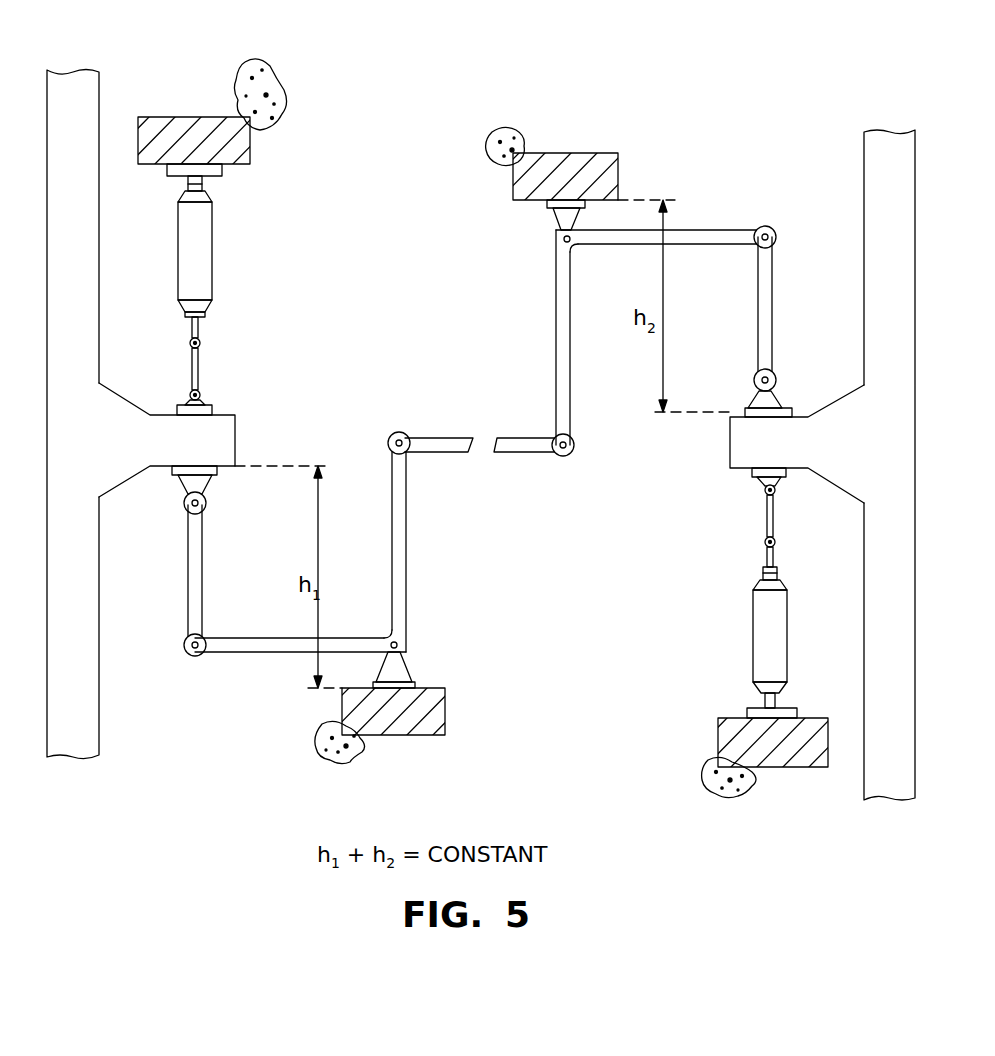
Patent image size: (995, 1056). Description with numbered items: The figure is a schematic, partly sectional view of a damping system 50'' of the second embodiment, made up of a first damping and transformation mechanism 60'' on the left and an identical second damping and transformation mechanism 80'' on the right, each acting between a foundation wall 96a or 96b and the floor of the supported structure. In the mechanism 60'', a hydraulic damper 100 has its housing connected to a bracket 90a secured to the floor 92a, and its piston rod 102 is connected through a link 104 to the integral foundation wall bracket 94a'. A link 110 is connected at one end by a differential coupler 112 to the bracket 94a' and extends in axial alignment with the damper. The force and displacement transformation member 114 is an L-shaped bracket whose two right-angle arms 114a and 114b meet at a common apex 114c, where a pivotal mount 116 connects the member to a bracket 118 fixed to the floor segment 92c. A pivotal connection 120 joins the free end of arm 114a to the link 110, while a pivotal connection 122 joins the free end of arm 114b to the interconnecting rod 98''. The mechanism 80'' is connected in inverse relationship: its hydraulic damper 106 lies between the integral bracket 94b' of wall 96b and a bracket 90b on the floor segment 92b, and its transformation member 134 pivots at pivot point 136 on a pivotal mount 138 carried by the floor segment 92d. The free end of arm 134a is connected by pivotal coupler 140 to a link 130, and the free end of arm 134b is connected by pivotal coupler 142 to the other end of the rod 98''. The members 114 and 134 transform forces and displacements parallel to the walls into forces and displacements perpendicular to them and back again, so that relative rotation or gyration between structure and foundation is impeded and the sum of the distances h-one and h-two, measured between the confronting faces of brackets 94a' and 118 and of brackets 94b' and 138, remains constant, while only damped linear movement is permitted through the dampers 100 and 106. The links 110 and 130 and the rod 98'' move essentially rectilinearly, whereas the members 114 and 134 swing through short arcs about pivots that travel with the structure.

The damping system 50'' is at (465, 25).
The first damping and transformation mechanism 60'' is at (286, 292).
The second damping and transformation mechanism 80'' is at (659, 561).
The bracket 90a is at (174, 117).
The lower anchor block 90b is at (787, 767).
The floor 92a is at (282, 76).
The rock/ground mass 92b is at (718, 796).
The floor segment 92c is at (333, 762).
The floor segment 92d is at (515, 127).
The integral foundation wall bracket 94a' is at (206, 440).
The integral foundation wall bracket 94b' is at (765, 444).
The foundation wall 96a is at (99, 230).
The foundation wall 96b is at (866, 182).
The interconnecting rod 98'' is at (484, 429).
The hydraulic damper 100 is at (212, 232).
The piston rod 102 is at (199, 327).
The link 104 is at (199, 367).
The hydraulic damper 106 is at (787, 635).
The link 110 is at (202, 560).
The differential coupler 112 is at (206, 502).
The force and displacement transformation member 114 is at (344, 547).
The arm 114a is at (332, 638).
The arm 114b is at (392, 520).
The common apex 114c is at (400, 640).
The pivotal mount 116 is at (400, 645).
The bracket 118 is at (445, 712).
The pivotal connection 120 is at (199, 656).
The pivotal connection 122 is at (398, 432).
The link 130 is at (772, 292).
The force and displacement transformation member 134 is at (617, 319).
The arm 134a is at (703, 230).
The arm 134b is at (571, 372).
The pivot point 136 is at (562, 239).
The pivotal mount 138 is at (600, 158).
The pivotal coupler 140 is at (773, 230).
The pivotal coupler 142 is at (574, 445).